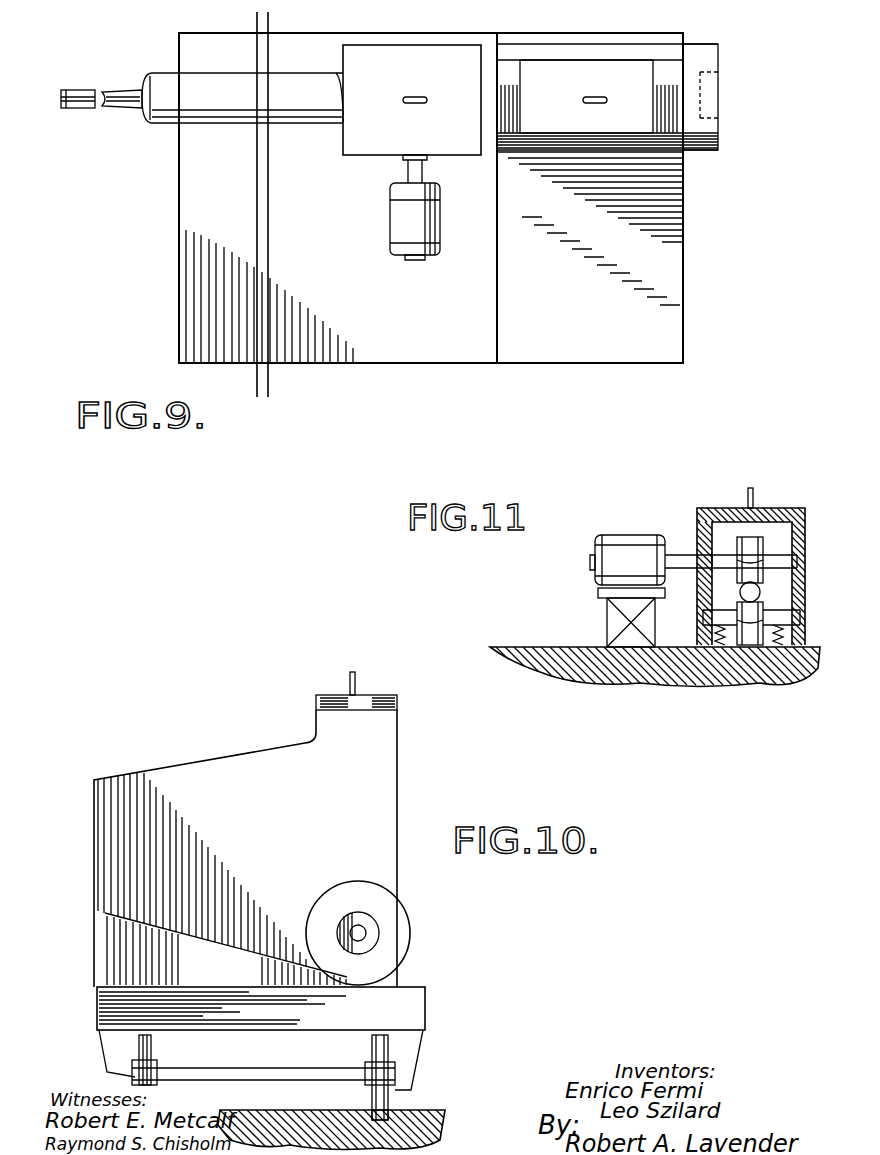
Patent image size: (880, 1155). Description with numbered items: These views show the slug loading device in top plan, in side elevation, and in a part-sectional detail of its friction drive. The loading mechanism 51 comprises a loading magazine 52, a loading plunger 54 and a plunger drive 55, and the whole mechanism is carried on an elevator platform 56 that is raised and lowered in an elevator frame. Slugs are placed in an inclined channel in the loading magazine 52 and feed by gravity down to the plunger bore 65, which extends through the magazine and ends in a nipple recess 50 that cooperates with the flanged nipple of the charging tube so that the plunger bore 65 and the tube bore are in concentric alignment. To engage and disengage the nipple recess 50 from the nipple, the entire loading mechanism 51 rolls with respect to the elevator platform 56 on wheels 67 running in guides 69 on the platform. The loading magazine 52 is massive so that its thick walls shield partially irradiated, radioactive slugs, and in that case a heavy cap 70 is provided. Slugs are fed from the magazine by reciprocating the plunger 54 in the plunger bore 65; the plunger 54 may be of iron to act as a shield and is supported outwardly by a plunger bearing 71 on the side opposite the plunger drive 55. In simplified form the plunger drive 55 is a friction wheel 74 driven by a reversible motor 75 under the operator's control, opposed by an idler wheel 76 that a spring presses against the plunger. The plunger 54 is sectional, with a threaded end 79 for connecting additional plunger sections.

In FIG. 9, the nipple recess 50 is at (722, 73).
In FIG. 10, the nipple recess 50 is at (377, 930).
In FIG. 9, the loading mechanism 51 is at (688, 254).
In FIG. 10, the loading mechanism 51 is at (402, 781).
In FIG. 9, the loading magazine 52 is at (655, 183).
In FIG. 10, the loading magazine 52 is at (228, 770).
In FIG. 9, the loading plunger 54 is at (118, 110).
In FIG. 11, the loading plunger 54 is at (762, 594).
In FIG. 9, the plunger drive 55 is at (430, 73).
In FIG. 11, the plunger drive 55 is at (783, 508).
In FIG. 10, the elevator platform 56 is at (264, 1112).
In FIG. 10, the plunger bore 65 is at (362, 938).
In FIG. 10, the wheels 67 is at (151, 1040).
In FIG. 10, the guides 69 is at (373, 1112).
In FIG. 9, the heavy cap 70 is at (627, 73).
In FIG. 10, the heavy cap 70 is at (385, 696).
In FIG. 9, the plunger bearing 71 is at (232, 58).
In FIG. 11, the friction wheel 74 is at (727, 537).
In FIG. 9, the motor 75 is at (392, 222).
In FIG. 11, the motor 75 is at (625, 542).
In FIG. 11, the idler wheel 76 is at (750, 645).
In FIG. 9, the threaded end 79 is at (66, 90).